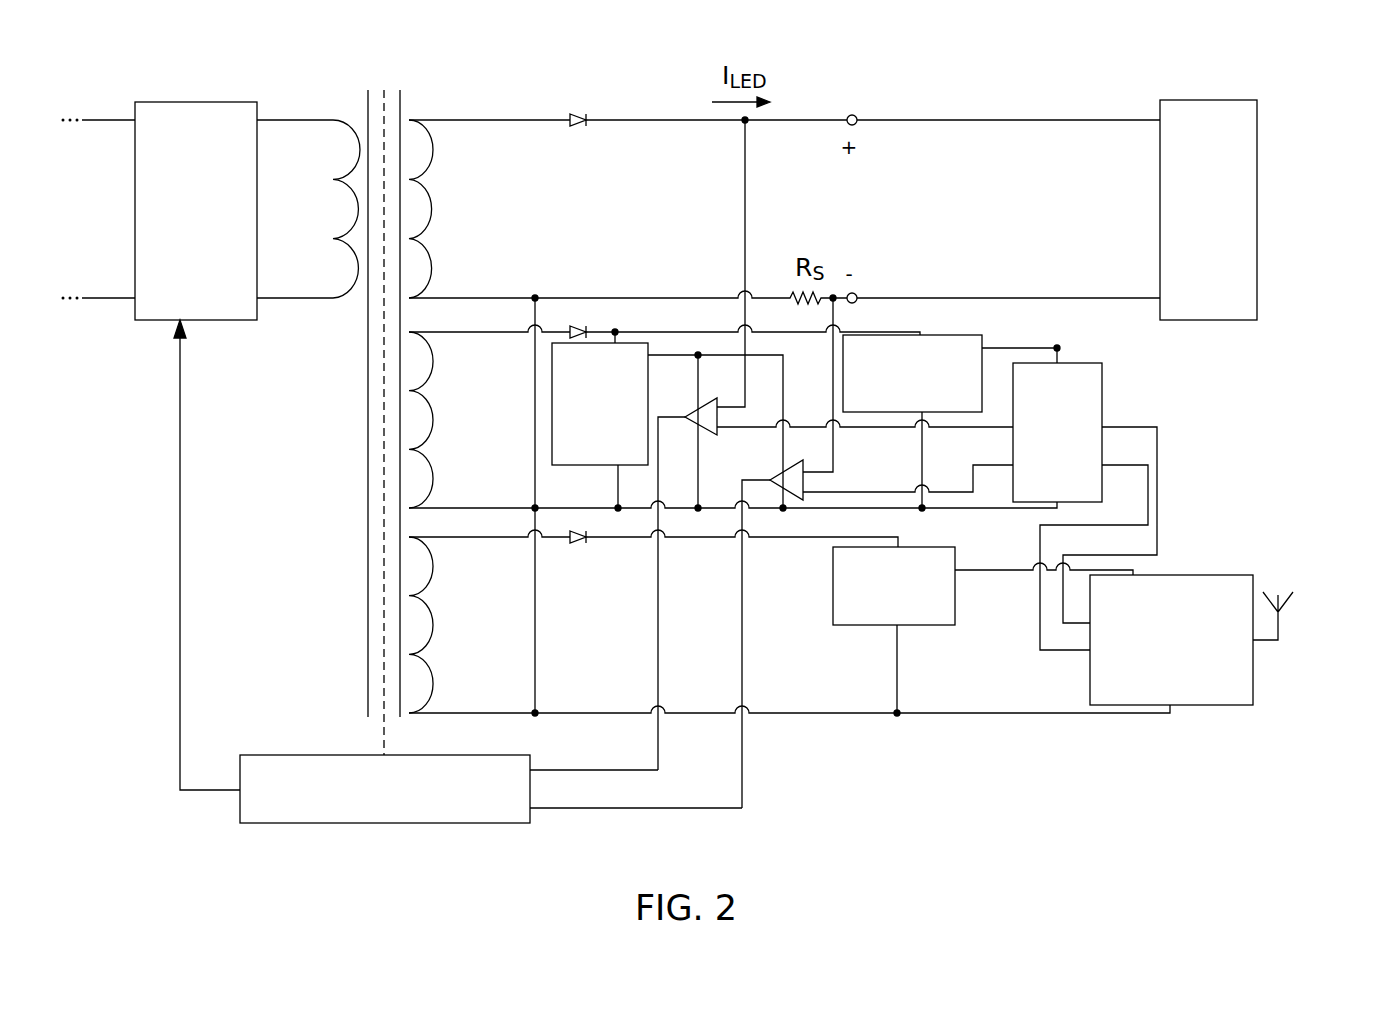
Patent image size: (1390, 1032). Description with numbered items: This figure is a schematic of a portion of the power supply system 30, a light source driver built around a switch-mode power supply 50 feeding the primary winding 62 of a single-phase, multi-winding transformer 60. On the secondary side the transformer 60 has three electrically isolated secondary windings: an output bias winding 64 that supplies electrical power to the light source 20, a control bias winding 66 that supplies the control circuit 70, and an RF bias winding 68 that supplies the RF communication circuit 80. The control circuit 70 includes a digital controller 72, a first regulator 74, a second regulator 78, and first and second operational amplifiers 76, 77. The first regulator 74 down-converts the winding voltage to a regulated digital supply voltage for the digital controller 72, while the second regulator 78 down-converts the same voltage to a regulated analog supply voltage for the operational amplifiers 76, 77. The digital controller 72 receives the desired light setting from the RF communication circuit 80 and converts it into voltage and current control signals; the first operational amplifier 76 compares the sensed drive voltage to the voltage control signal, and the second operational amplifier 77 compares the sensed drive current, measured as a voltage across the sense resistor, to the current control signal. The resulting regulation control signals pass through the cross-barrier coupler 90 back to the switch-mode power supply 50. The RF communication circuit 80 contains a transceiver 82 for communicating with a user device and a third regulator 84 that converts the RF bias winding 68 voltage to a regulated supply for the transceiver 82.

The light source 20 is at (1207, 100).
The power supply system 30 is at (47, 823).
The switch-mode power supply 50 is at (178, 102).
The transformer 60 is at (287, 80).
The primary winding 62 is at (340, 238).
The output bias winding 64 is at (508, 120).
The control bias winding 66 is at (435, 449).
The RF bias winding 68 is at (435, 654).
The control circuit 70 is at (1228, 335).
The digital controller 72 is at (1103, 390).
The first regulator 74 is at (985, 346).
The first operational amplifier 76 is at (704, 430).
The second operational amplifier 77 is at (768, 478).
The second regulator 78 is at (622, 343).
The RF communication circuit 80 is at (1352, 558).
The transceiver 82 is at (1168, 575).
The third regulator 84 is at (928, 625).
The cross-barrier coupler 90 is at (300, 755).